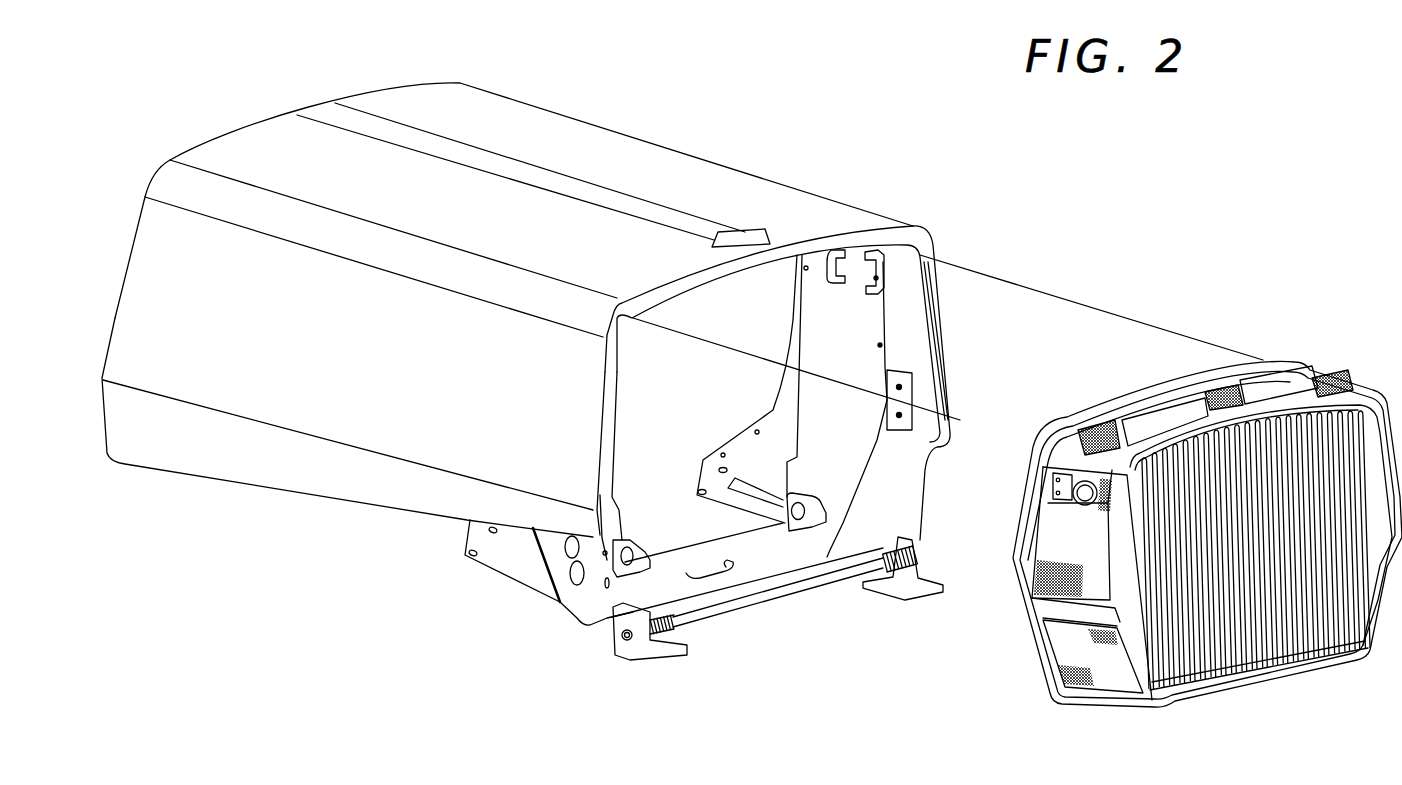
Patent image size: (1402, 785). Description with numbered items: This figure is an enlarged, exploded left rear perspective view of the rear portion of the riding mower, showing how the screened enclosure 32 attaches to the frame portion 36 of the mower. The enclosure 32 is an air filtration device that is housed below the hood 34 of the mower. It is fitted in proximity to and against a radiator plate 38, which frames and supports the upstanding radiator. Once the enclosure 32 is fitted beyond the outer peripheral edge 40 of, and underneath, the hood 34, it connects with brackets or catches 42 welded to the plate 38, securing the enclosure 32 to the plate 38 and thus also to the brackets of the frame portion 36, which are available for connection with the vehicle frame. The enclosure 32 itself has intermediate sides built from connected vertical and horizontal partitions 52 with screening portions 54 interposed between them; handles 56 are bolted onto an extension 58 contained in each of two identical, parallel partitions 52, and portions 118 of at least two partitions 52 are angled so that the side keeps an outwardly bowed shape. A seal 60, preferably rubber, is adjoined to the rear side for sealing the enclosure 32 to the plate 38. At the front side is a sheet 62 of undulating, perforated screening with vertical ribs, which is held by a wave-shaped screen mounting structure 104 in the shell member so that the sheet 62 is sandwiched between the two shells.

The screened enclosure 32 is at (1146, 511).
The hood 34 is at (635, 143).
The frame portion 36 is at (517, 587).
The radiator plate 38 is at (582, 623).
The outer peripheral edge 40 is at (595, 510).
The brackets or catches 42 is at (883, 253).
The partitions 52 is at (1083, 612).
The screening portions 54 is at (1105, 677).
The handles 56 is at (1090, 513).
The extension 58 is at (1050, 487).
The seal 60 is at (1023, 640).
The sheet of undulating screening 62 is at (1347, 612).
The screen mounting structure 104 is at (1268, 683).
The angled portions of partitions 118 is at (1037, 595).